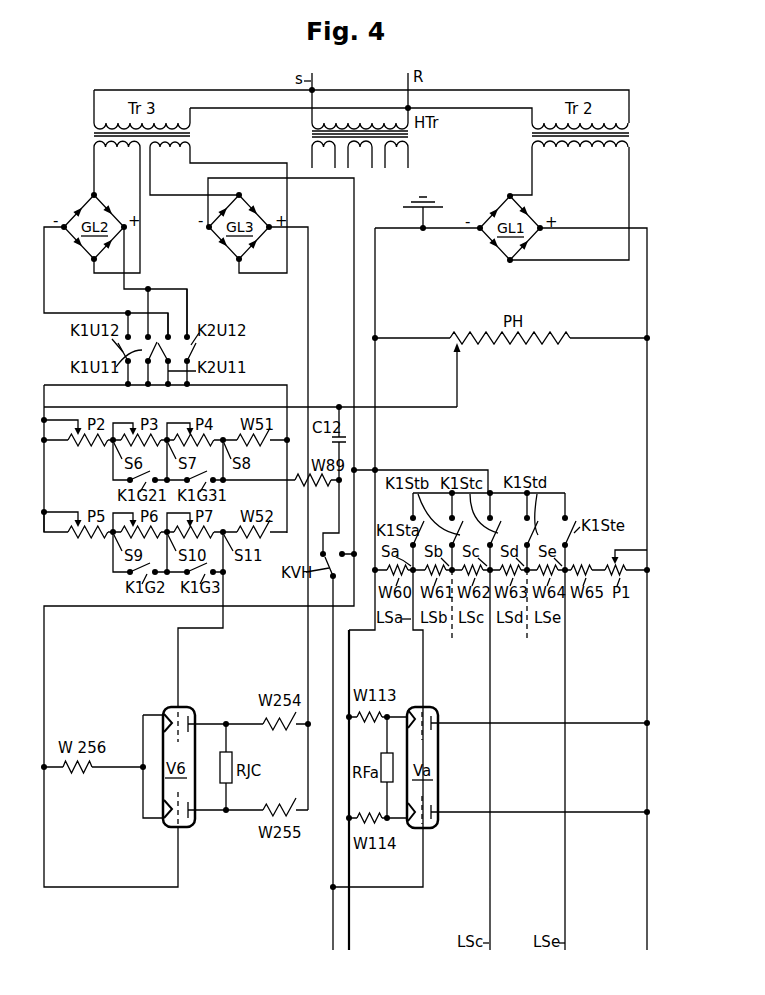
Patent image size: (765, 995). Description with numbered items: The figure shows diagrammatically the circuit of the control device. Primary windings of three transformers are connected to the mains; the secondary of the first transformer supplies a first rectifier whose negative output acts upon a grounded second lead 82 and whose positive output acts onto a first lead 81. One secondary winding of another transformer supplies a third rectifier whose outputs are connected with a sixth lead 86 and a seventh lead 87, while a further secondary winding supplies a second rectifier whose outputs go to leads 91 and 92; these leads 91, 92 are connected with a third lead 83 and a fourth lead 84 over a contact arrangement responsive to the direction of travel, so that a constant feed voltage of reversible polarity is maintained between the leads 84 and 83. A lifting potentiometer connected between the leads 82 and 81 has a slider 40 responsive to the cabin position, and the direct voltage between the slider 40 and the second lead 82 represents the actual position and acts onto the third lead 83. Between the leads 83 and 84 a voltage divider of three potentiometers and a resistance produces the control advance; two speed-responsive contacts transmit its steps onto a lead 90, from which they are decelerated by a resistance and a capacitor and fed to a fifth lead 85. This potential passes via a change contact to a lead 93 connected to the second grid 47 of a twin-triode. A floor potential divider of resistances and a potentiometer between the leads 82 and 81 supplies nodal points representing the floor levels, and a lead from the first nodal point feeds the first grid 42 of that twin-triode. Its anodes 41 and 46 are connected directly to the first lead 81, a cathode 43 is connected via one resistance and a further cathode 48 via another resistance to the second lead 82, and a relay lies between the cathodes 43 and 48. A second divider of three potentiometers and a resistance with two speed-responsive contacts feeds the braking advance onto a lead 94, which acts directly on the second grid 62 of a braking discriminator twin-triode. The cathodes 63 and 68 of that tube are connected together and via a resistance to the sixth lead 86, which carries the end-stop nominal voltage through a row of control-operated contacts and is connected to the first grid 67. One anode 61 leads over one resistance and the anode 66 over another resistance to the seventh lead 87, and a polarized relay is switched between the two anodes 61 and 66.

The slider 40 is at (459, 362).
The anode 41 is at (436, 719).
The first grid 42 is at (413, 711).
The cathode 43 is at (406, 728).
The anode 46 is at (433, 827).
The second grid 47 is at (411, 824).
The further cathode 48 is at (406, 811).
The anode 61 is at (194, 722).
The second grid 62 is at (190, 715).
The cathode 63 is at (164, 716).
The anode 66 is at (194, 815).
The first grid 67 is at (189, 819).
The cathode 68 is at (163, 826).
The first lead 81 is at (647, 233).
The second lead 82 is at (375, 262).
The third lead 83 is at (44, 398).
The fourth lead 84 is at (289, 399).
The fifth lead 85 is at (338, 525).
The sixth lead 86 is at (358, 187).
The seventh lead 87 is at (308, 250).
The lead 90 is at (261, 482).
The lead 91 is at (49, 301).
The lead 92 is at (185, 292).
The lead 93 is at (333, 938).
The lead 94 is at (223, 625).